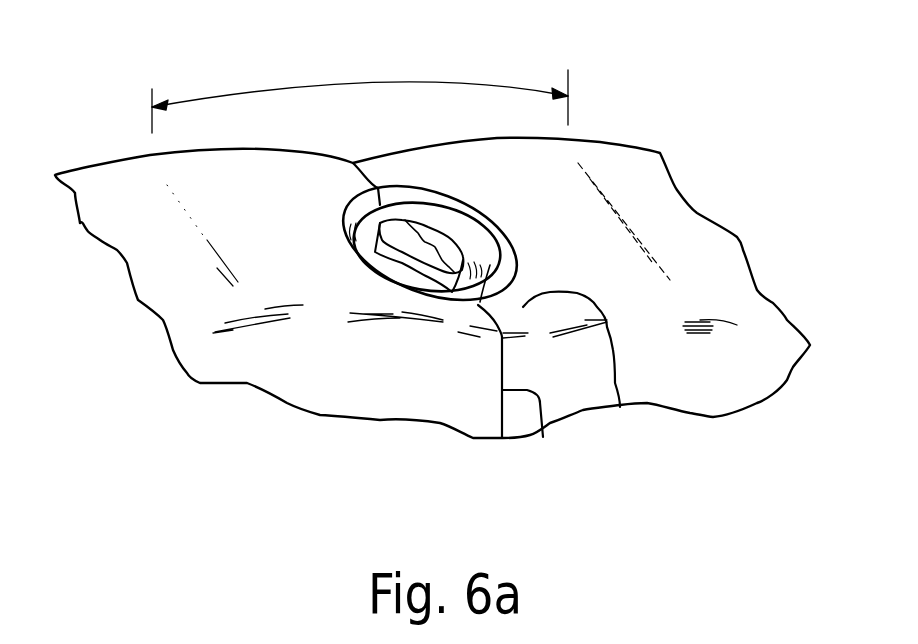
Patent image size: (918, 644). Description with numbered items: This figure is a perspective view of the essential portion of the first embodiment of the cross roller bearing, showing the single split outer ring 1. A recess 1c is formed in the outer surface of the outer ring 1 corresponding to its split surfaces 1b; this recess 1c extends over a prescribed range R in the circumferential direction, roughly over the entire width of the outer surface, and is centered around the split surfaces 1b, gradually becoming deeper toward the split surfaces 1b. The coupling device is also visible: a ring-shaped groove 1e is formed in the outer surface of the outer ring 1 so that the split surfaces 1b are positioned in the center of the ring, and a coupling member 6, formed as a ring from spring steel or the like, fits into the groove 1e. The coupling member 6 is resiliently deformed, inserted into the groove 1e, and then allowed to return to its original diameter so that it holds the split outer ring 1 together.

The outer ring 1 is at (750, 243).
The split surfaces 1b is at (500, 415).
The recess 1c is at (620, 407).
The ring-shaped groove 1e is at (490, 236).
The coupling member 6 is at (491, 264).
The prescribed range R is at (360, 95).